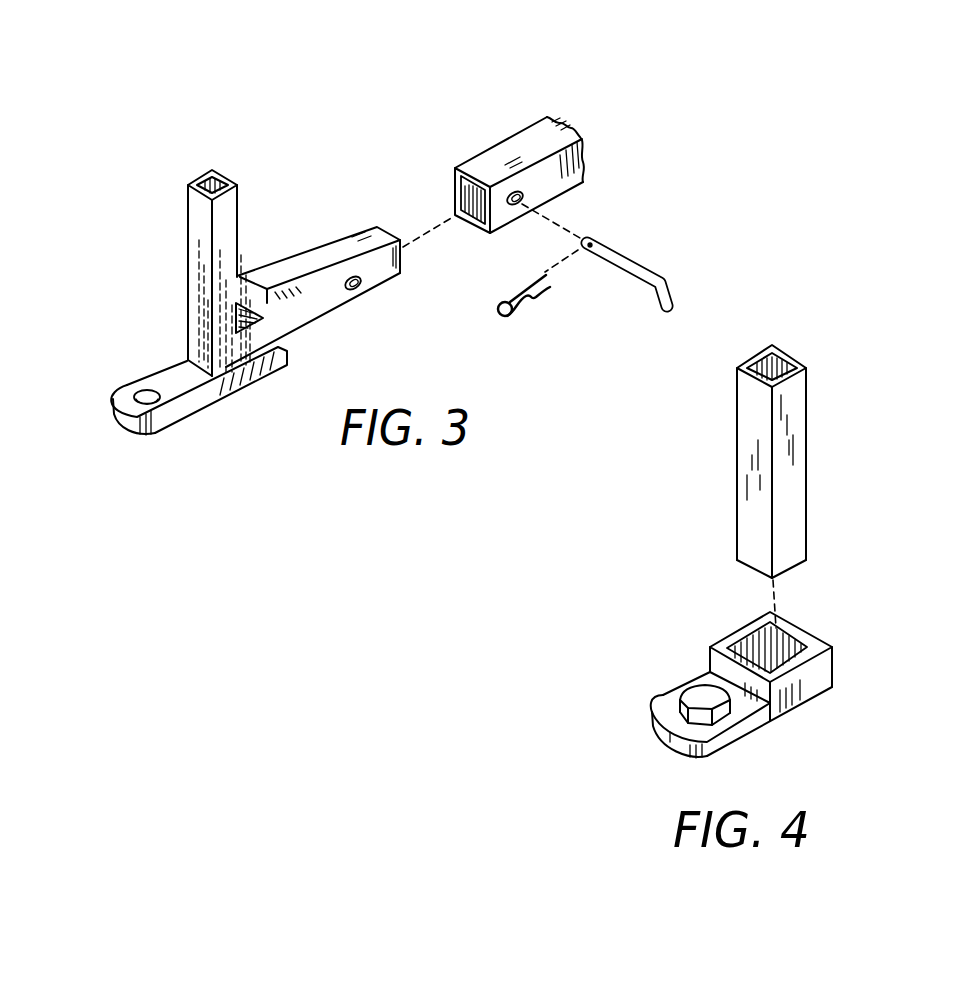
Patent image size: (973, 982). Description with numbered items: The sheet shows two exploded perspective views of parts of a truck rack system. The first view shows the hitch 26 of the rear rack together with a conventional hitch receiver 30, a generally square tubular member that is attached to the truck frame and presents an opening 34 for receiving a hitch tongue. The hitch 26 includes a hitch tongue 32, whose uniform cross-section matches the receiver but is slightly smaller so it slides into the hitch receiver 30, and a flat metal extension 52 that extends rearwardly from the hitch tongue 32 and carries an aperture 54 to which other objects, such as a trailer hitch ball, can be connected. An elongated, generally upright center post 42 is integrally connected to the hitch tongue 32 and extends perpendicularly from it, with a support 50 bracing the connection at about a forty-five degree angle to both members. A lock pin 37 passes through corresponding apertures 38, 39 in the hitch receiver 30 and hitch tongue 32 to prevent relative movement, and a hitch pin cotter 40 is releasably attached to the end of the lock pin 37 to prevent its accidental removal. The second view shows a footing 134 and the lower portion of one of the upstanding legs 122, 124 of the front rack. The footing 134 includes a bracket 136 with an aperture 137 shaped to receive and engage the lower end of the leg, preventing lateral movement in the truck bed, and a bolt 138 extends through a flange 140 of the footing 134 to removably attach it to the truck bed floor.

In FIG. 3, the hitch 26 is at (322, 336).
In FIG. 3, the hitch receiver 30 is at (495, 143).
In FIG. 3, the hitch tongue 32 is at (347, 257).
In FIG. 3, the opening 34 is at (468, 200).
In FIG. 3, the lock pin 37 is at (627, 252).
In FIG. 3, the aperture 38 is at (523, 200).
In FIG. 3, the aperture 39 is at (359, 290).
In FIG. 3, the hitch pin cotter 40 is at (513, 313).
In FIG. 3, the center post 42 is at (228, 212).
In FIG. 3, the support 50 is at (240, 288).
In FIG. 3, the extension 52 is at (198, 407).
In FIG. 3, the aperture 54 is at (142, 392).
In FIG. 4, the leg 122 is at (843, 461).
In FIG. 4, the leg 124 is at (807, 470).
In FIG. 4, the footing 134 is at (817, 707).
In FIG. 4, the bracket 136 is at (822, 672).
In FIG. 4, the aperture 137 is at (783, 622).
In FIG. 4, the bolt 138 is at (662, 700).
In FIG. 4, the flange 140 is at (747, 729).